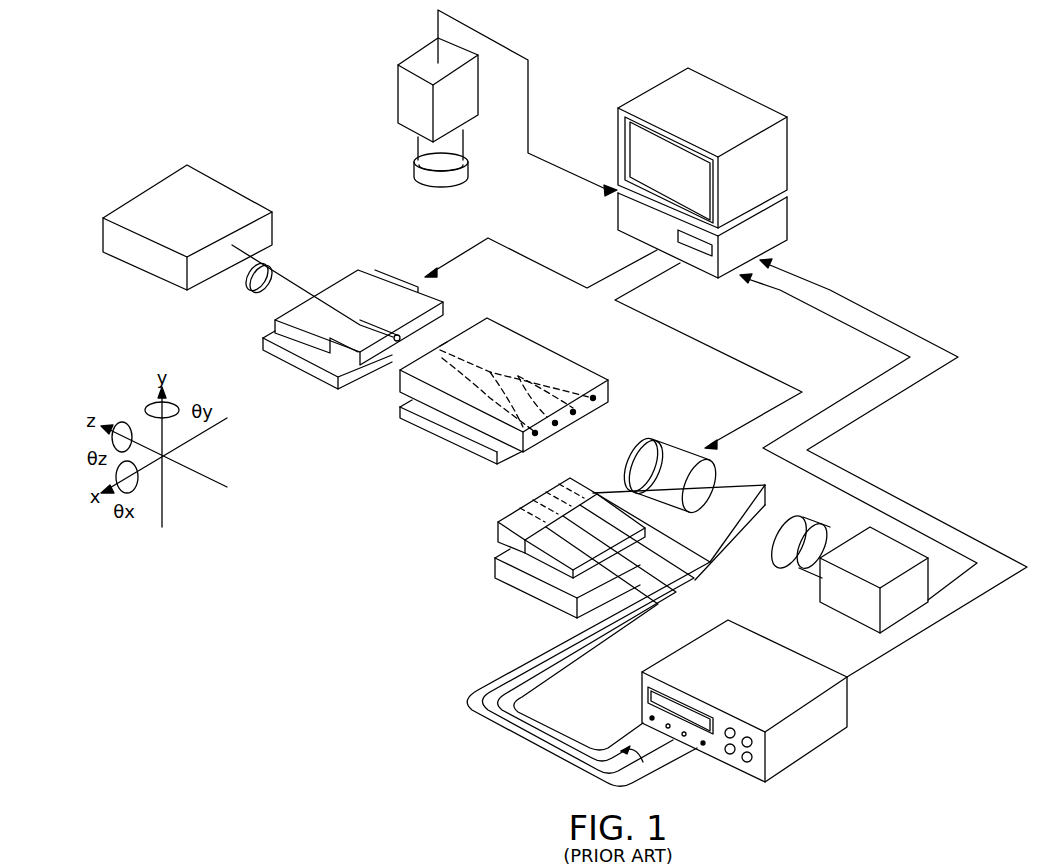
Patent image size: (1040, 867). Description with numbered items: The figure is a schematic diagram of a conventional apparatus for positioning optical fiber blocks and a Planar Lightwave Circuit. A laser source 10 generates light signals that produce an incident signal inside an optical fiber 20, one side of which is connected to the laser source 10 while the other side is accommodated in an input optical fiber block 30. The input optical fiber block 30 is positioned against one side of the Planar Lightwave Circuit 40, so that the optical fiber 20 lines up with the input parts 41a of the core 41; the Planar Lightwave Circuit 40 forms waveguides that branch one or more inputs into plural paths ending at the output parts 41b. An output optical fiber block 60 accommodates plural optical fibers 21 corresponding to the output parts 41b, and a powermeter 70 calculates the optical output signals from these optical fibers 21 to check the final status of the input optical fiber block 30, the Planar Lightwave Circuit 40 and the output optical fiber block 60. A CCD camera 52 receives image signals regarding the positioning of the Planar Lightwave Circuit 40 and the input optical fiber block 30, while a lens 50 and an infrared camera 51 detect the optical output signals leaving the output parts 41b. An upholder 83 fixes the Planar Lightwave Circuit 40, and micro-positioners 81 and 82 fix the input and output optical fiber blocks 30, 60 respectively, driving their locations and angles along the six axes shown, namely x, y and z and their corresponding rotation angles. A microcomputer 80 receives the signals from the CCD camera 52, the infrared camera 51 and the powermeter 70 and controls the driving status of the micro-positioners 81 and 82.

The laser source 10 is at (217, 182).
The optical fiber 20 is at (298, 292).
The optical fibers 21 is at (455, 697).
The input optical fiber block 30 is at (395, 270).
The Planar Lightwave Circuit 40 is at (557, 352).
The core 41 is at (518, 376).
The input parts 41a is at (445, 345).
The output parts 41b is at (597, 398).
The lens 50 is at (668, 445).
The infrared camera 51 is at (908, 618).
The charge coupled device (CCD) camera 52 is at (398, 100).
The output optical fiber block 60 is at (513, 522).
The powermeter 70 is at (838, 745).
The microcomputer 80 is at (730, 88).
The micro-positioner 81 is at (313, 382).
The micro-positioner 82 is at (505, 590).
The upholder 83 is at (472, 456).